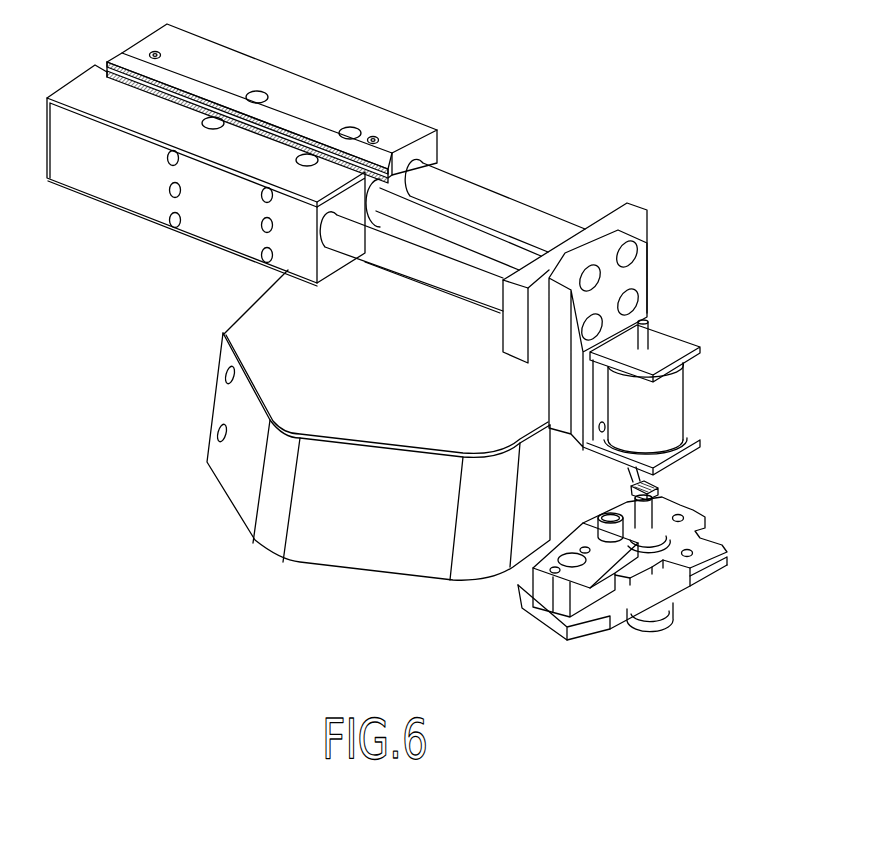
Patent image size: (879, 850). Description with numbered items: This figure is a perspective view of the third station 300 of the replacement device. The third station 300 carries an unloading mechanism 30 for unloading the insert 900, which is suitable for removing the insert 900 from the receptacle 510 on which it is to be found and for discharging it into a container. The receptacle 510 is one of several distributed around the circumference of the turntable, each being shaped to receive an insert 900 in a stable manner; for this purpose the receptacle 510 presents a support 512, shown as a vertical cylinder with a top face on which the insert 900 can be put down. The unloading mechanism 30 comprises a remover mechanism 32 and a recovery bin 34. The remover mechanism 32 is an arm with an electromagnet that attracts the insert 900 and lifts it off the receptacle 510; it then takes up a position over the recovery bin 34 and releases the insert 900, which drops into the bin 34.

The unloading mechanism 30 is at (415, 355).
The remover mechanism 32 is at (663, 397).
The recovery bin 34 is at (363, 547).
The third station 300 is at (650, 579).
The receptacle 510 is at (690, 517).
The support 512 is at (648, 512).
The insert 900 is at (628, 483).